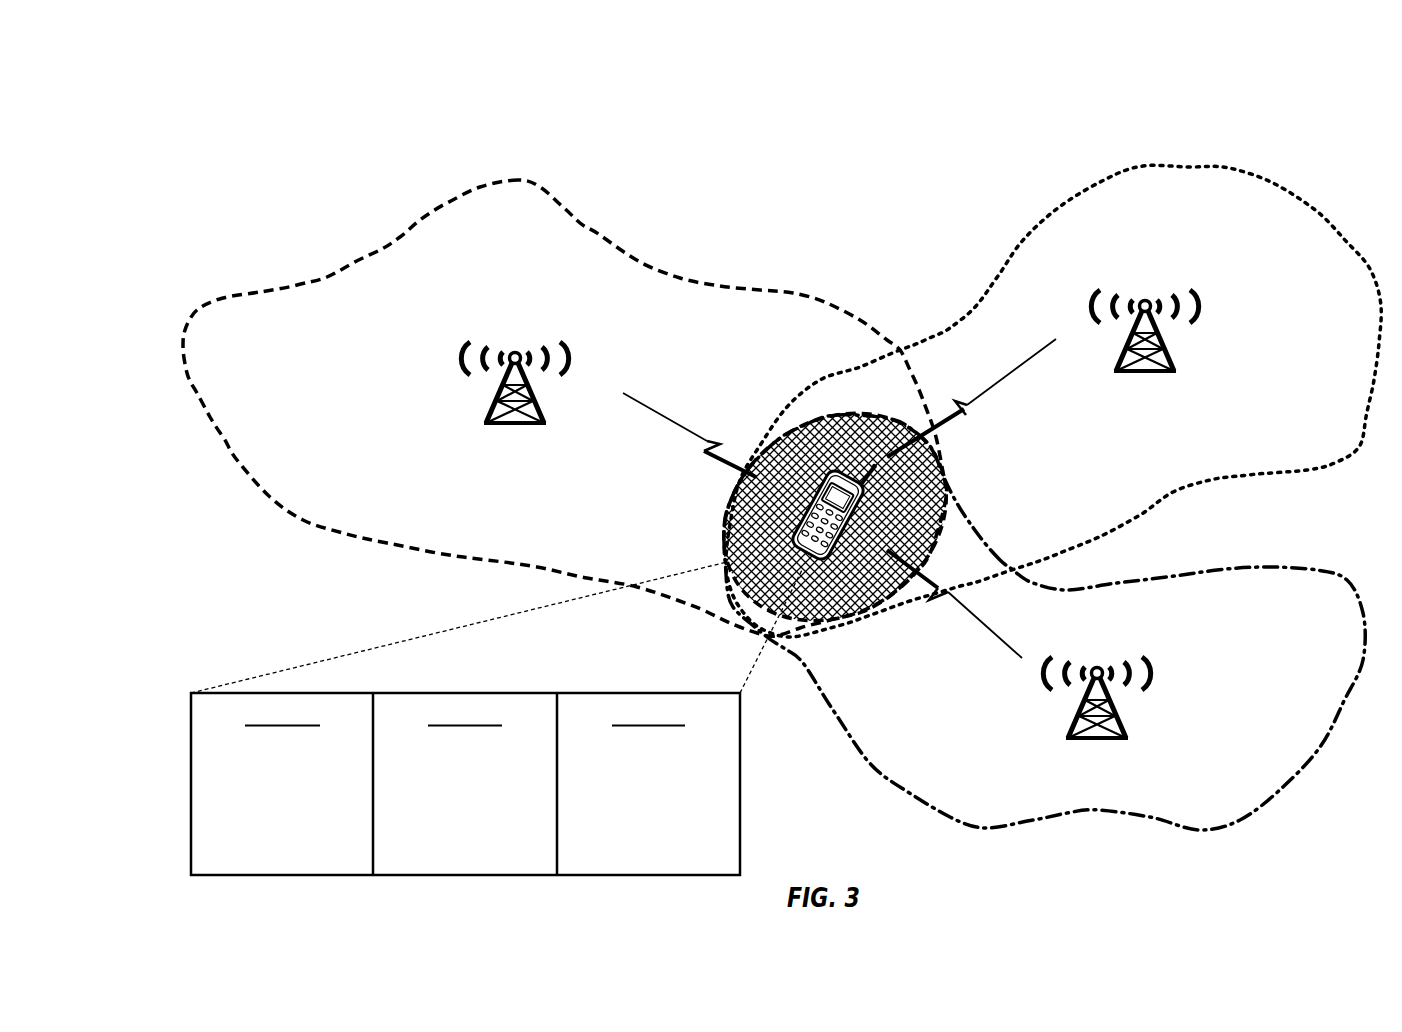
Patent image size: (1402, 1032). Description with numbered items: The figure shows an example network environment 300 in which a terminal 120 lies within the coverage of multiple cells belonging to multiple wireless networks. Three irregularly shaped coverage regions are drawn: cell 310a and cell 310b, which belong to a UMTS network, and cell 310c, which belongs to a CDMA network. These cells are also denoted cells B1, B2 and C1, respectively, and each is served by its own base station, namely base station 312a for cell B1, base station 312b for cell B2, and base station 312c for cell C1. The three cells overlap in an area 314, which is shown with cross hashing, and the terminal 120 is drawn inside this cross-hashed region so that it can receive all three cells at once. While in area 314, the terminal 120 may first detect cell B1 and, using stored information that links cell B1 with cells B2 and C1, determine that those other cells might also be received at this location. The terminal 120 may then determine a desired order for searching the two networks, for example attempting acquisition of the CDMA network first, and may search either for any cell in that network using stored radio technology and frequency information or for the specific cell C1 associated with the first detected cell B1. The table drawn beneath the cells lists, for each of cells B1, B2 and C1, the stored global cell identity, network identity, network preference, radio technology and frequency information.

The network environment 300 is at (322, 88).
The cell B1 310a is at (514, 179).
The cell B2 310b is at (1194, 165).
The cell C1 310c is at (1258, 568).
The base station 312a is at (512, 352).
The base station 312b is at (1143, 301).
The base station 312c is at (1096, 668).
The overlap area 314 is at (921, 536).
The terminal 120 is at (839, 481).